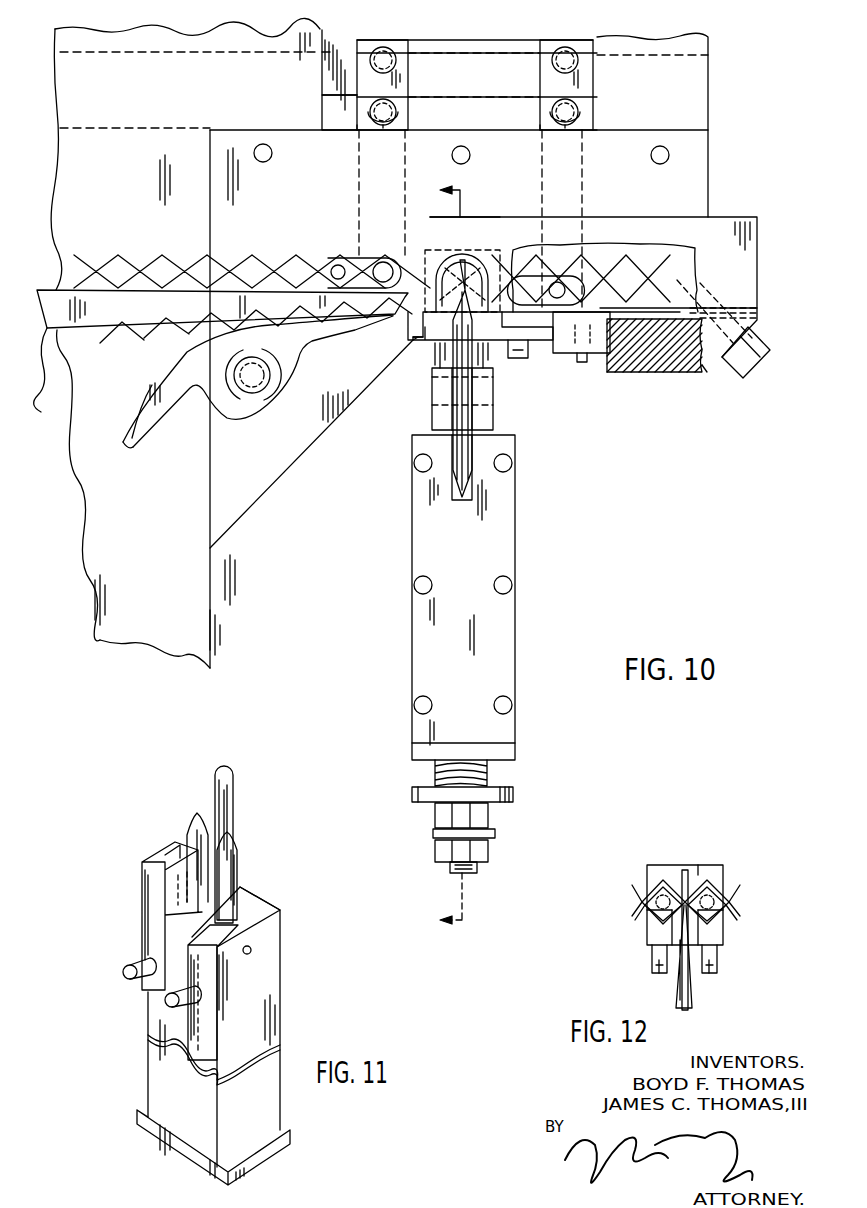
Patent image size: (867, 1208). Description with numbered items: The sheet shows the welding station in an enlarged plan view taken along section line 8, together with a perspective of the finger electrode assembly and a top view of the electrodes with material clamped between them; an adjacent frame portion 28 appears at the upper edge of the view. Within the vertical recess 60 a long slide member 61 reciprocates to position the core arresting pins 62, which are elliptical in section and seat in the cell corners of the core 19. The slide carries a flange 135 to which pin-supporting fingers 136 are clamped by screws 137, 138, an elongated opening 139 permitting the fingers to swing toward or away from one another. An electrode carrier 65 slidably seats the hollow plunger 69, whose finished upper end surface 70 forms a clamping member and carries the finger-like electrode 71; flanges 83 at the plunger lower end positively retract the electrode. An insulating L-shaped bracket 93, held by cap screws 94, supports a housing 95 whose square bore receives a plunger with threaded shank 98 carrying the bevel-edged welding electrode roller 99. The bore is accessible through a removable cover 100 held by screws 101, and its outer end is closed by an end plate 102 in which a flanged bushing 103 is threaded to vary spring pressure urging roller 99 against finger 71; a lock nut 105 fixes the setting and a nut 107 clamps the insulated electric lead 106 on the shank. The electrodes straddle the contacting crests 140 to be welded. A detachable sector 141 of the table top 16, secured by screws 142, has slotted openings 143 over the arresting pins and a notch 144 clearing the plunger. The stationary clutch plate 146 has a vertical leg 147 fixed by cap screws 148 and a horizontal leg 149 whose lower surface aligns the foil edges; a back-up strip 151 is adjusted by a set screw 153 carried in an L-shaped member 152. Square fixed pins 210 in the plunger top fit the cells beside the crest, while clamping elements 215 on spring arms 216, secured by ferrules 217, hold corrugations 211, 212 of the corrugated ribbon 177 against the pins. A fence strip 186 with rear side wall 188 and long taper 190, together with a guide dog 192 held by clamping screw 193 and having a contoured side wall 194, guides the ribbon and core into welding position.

In FIG. 10, the section line 8 is at (460, 557).
In FIG. 10, the table top 16 is at (210, 652).
In FIG. 10, the core 19 is at (158, 252).
In FIG. 10, the frame portion 28 is at (330, 52).
In FIG. 10, the vertical recess 60 is at (332, 108).
In FIG. 10, the slide member 61 is at (512, 93).
In FIG. 10, the core arresting pins 62 is at (380, 262).
In FIG. 10, the electrode carrier 65 is at (425, 350).
In FIG. 11, the electrode-carrying plunger 69 is at (272, 963).
In FIG. 12, the electrode-carrying plunger 69 is at (723, 867).
In FIG. 10, the upper end surface 70 is at (488, 262).
In FIG. 11, the upper end surface 70 is at (255, 895).
In FIG. 12, the upper end surface 70 is at (702, 875).
In FIG. 10, the finger-like electrode 71 is at (458, 262).
In FIG. 11, the finger-like electrode 71 is at (232, 786).
In FIG. 12, the finger-like electrode 71 is at (685, 872).
In FIG. 11, the flanges 83 is at (142, 1110).
In FIG. 10, the L-shaped bracket 93 is at (434, 380).
In FIG. 10, the cap screws 94 is at (520, 358).
In FIG. 10, the housing 95 is at (493, 420).
In FIG. 10, the threaded shank 98 is at (478, 870).
In FIG. 10, the welding electrode roller 99 is at (452, 418).
In FIG. 12, the welding electrode roller 99 is at (677, 1008).
In FIG. 10, the removable cover 100 is at (492, 547).
In FIG. 10, the screws 101 is at (512, 463).
In FIG. 10, the end plate 102 is at (510, 752).
In FIG. 10, the flanged bushing 103 is at (513, 796).
In FIG. 10, the lock nut 105 is at (488, 815).
In FIG. 10, the insulated electric lead 106 is at (495, 834).
In FIG. 10, the nut 107 is at (488, 851).
In FIG. 10, the flange 135 is at (497, 40).
In FIG. 10, the pin-supporting fingers 136 is at (357, 130).
In FIG. 10, the clamping screw 137 is at (383, 47).
In FIG. 10, the clamping screw 138 is at (385, 126).
In FIG. 10, the elongated opening 139 is at (396, 112).
In FIG. 10, the contacting crests 140 is at (413, 337).
In FIG. 10, the detachable sector 141 is at (700, 176).
In FIG. 10, the screws 142 is at (263, 144).
In FIG. 10, the slotted openings 143 is at (354, 258).
In FIG. 10, the notch 144 is at (413, 345).
In FIG. 10, the stationary clutch plate 146 is at (745, 217).
In FIG. 10, the vertical leg 147 is at (690, 375).
In FIG. 10, the cap screws 148 is at (748, 378).
In FIG. 10, the horizontal leg 149 is at (478, 222).
In FIG. 10, the back-up strip 151 is at (565, 353).
In FIG. 10, the L-shaped member 152 is at (606, 372).
In FIG. 10, the set screw 153 is at (582, 364).
In FIG. 10, the corrugated ribbon 177 is at (126, 338).
In FIG. 12, the corrugated ribbon 177 is at (637, 905).
In FIG. 10, the fence strip 186 is at (45, 370).
In FIG. 10, the rear side wall 188 is at (64, 288).
In FIG. 10, the long taper 190 is at (72, 340).
In FIG. 10, the guide dog 192 is at (282, 403).
In FIG. 10, the clamping screw 193 is at (246, 399).
In FIG. 10, the contoured side wall 194 is at (158, 382).
In FIG. 11, the fixed pins 210 is at (190, 828).
In FIG. 12, the fixed pins 210 is at (650, 893).
In FIG. 12, the corrugation 211 is at (655, 930).
In FIG. 12, the corrugation 212 is at (718, 930).
In FIG. 11, the clamping elements 215 is at (160, 846).
In FIG. 12, the clamping elements 215 is at (650, 950).
In FIG. 11, the spring arms 216 is at (140, 915).
In FIG. 11, the ferrules 217 is at (124, 972).
In FIG. 12, the ferrules 217 is at (718, 970).